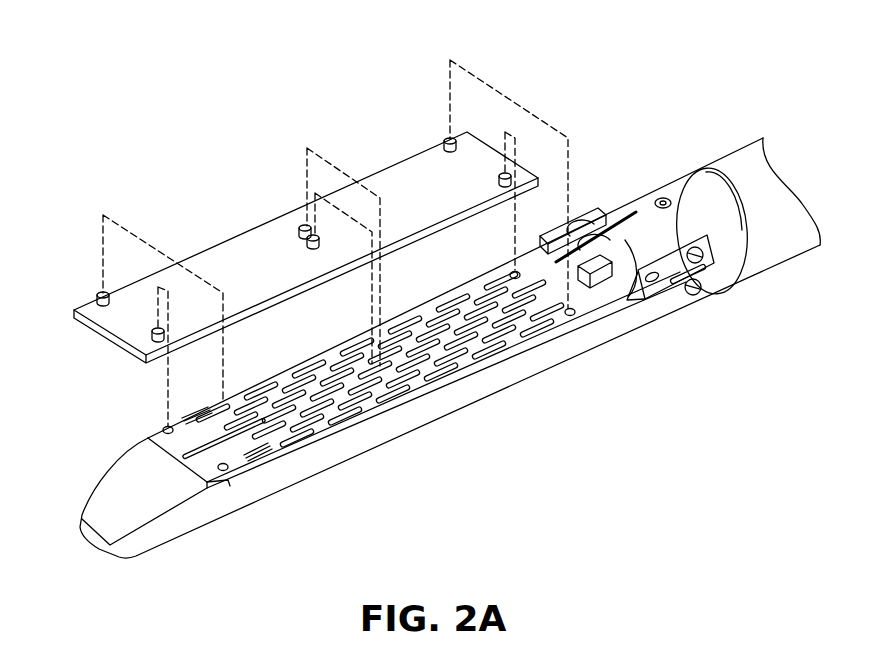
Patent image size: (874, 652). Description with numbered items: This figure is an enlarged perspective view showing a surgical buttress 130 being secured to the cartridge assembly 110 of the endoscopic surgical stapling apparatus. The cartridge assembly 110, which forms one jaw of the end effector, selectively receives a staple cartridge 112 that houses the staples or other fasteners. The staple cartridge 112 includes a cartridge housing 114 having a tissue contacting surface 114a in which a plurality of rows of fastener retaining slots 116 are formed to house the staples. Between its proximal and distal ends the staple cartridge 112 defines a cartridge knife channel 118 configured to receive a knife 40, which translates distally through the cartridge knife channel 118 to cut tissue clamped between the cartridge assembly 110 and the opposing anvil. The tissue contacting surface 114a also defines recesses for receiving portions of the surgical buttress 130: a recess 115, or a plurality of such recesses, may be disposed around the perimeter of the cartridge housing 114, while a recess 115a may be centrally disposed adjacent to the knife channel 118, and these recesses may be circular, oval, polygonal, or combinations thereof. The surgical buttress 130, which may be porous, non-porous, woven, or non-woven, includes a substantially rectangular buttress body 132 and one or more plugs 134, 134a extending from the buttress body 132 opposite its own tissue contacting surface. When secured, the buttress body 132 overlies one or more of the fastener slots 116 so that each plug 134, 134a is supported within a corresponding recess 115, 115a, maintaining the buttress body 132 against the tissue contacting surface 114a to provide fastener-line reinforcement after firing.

The knife 40 is at (635, 275).
The cartridge assembly 110 is at (107, 527).
The staple cartridge 112 is at (569, 324).
The cartridge housing 114 is at (155, 440).
The tissue contacting surface 114a is at (224, 479).
The recess 115 is at (166, 432).
The recess 115a is at (392, 374).
The fastener retaining slots 116 is at (298, 442).
The cartridge knife channel 118 is at (543, 286).
The surgical buttress 130 is at (232, 235).
The buttress body 132 is at (197, 260).
The plug 134 is at (103, 294).
The plug 134a is at (305, 229).